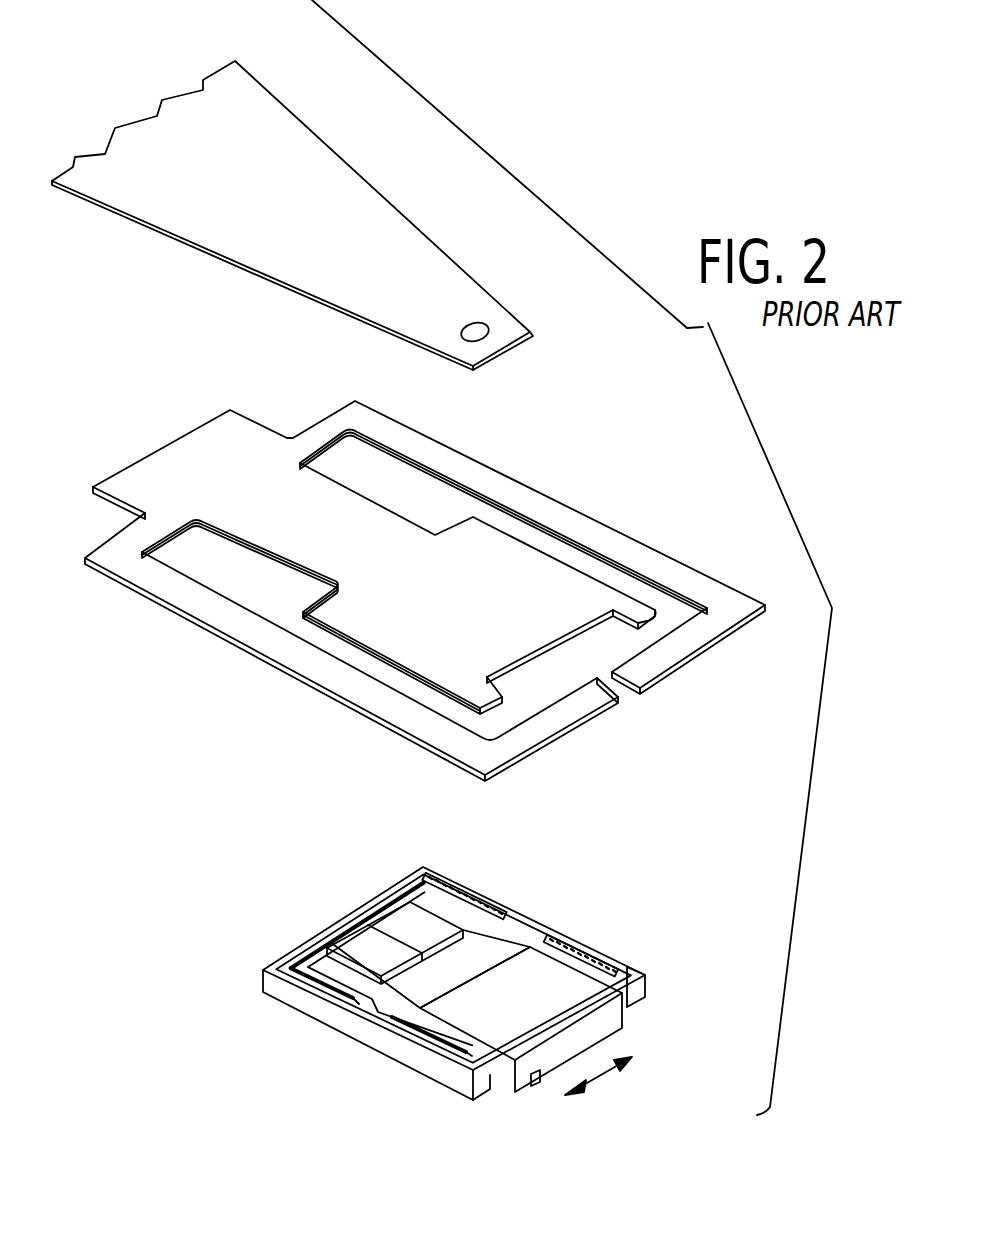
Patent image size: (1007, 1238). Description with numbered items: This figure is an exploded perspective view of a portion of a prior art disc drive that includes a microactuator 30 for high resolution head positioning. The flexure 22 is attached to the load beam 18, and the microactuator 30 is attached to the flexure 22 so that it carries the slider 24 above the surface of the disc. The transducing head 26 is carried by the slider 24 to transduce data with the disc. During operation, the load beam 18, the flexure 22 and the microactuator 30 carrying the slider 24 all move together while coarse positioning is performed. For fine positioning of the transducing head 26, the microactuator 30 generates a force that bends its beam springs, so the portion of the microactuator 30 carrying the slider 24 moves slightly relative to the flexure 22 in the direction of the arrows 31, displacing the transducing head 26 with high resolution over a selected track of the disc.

The load beam 18 is at (300, 138).
The flexure 22 is at (518, 478).
The microactuator 30 is at (543, 916).
The slider 24 is at (610, 1048).
The transducing head 26 is at (536, 1082).
The arrows 31 is at (597, 1077).